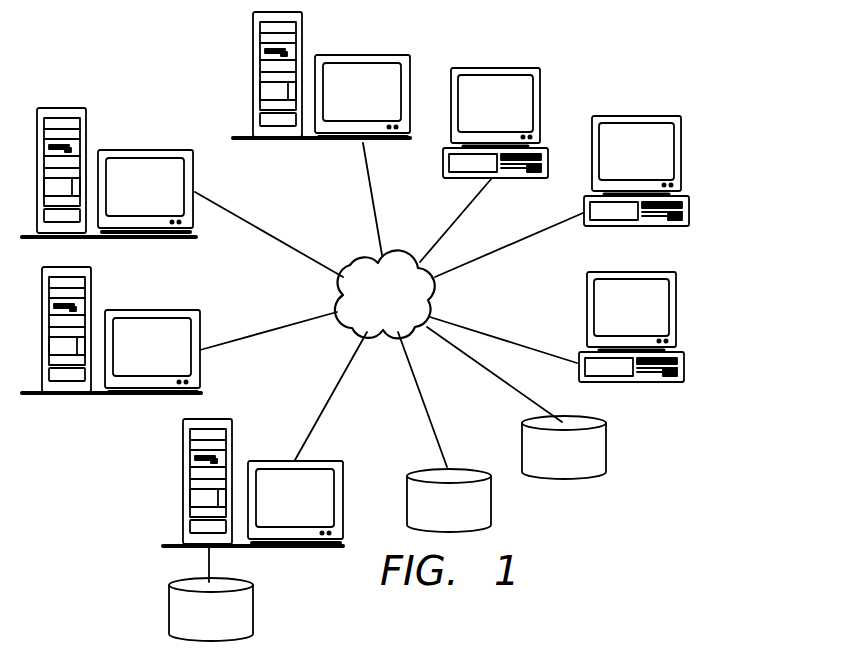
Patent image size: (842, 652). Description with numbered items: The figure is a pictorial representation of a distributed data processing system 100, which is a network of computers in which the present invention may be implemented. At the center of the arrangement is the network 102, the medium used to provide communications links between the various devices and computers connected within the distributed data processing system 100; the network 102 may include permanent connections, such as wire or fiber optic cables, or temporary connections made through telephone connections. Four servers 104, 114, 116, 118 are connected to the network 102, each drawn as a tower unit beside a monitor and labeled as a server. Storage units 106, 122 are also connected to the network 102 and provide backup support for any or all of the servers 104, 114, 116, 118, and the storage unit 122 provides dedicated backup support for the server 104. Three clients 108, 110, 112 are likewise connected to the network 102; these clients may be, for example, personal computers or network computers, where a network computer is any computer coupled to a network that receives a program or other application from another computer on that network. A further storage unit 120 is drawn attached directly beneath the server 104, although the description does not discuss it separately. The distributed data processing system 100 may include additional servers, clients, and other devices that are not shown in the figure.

The distributed data processing system 100 is at (747, 130).
The network 102 is at (408, 309).
The server 104 is at (316, 514).
The storage unit 106 is at (583, 466).
The client 108 is at (514, 116).
The client 110 is at (658, 167).
The client 112 is at (654, 322).
The server 114 is at (173, 361).
The server 116 is at (165, 194).
The server 118 is at (382, 107).
The storage unit 120 is at (229, 627).
The storage unit 122 is at (468, 519).